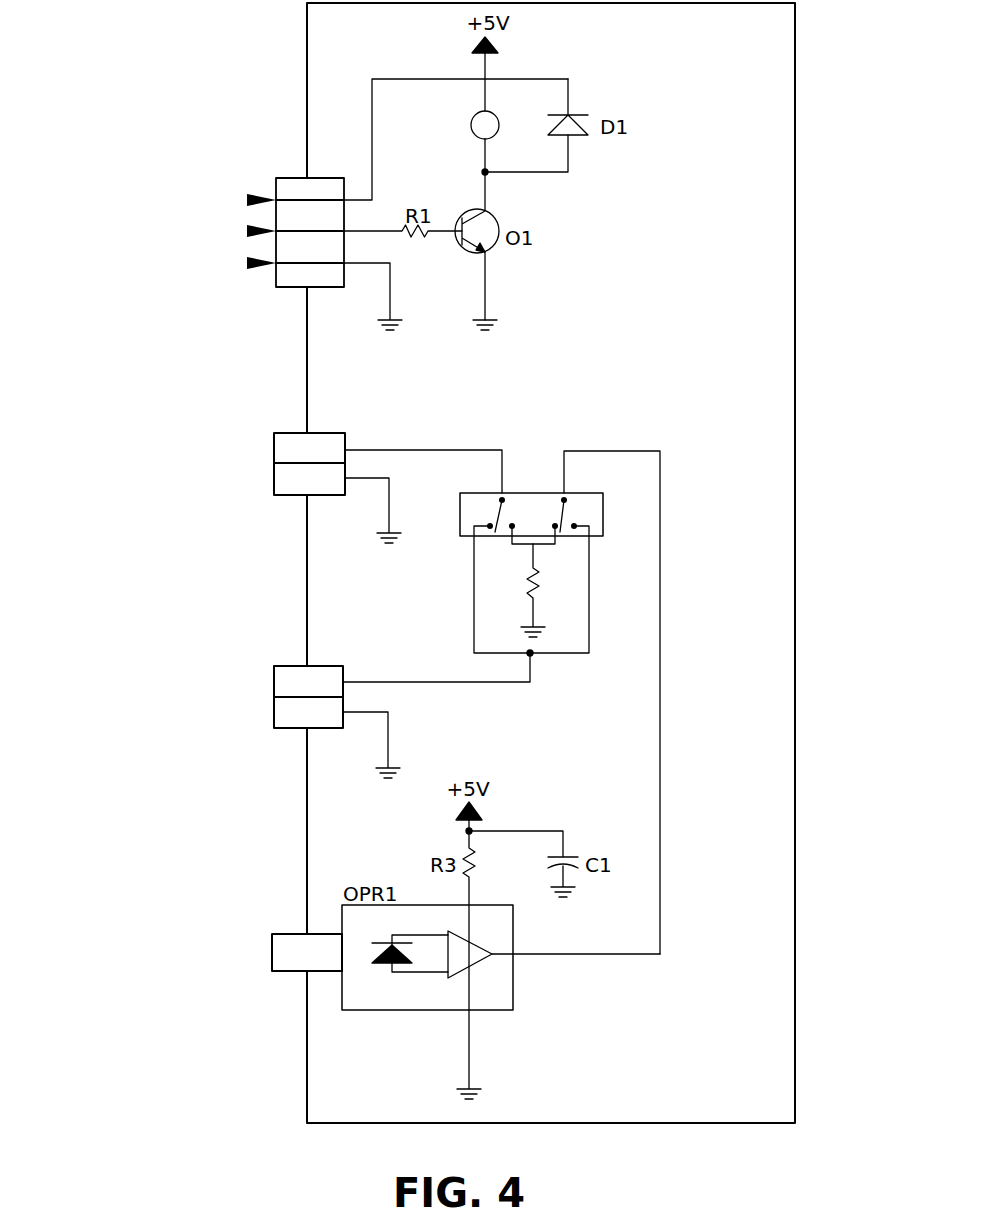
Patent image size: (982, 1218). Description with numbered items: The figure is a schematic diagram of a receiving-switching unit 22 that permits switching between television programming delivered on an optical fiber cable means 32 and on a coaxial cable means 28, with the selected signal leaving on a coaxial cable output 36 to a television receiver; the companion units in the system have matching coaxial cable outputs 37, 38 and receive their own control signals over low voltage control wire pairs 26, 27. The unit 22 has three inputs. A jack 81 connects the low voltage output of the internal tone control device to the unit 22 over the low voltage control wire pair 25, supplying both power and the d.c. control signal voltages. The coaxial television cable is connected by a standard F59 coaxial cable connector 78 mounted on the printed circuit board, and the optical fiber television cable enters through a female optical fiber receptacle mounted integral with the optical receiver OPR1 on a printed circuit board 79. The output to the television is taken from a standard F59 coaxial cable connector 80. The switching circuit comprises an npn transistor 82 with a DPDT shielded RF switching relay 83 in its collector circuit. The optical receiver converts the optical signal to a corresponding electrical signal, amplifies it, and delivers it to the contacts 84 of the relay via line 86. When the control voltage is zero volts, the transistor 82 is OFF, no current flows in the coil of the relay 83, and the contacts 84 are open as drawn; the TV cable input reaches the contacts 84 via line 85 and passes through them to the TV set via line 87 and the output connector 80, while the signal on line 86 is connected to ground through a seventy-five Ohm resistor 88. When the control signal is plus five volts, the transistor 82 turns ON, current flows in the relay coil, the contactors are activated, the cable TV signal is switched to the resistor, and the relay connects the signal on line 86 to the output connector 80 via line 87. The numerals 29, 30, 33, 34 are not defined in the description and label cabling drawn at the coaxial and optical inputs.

The receiving-switching unit 22 is at (795, 395).
The low voltage control wire pair 25 is at (258, 306).
The low voltage control wire pair 26 is at (215, 213).
The low voltage control wire pair 27 is at (215, 213).
The coaxial cable means 28 is at (258, 511).
The cable TV input conductor 29 is at (225, 443).
The cable TV input ground conductor 30 is at (233, 443).
The optical fiber cable means 32 is at (258, 1009).
The optical fibre 33 is at (217, 929).
The optical fibre connector 34 is at (232, 929).
The coaxial cable output 36 is at (280, 763).
The coaxial cable output 37 is at (225, 692).
The coaxial cable output 38 is at (232, 692).
The F59 coaxial cable connector 78 is at (325, 433).
The printed circuit board 79 is at (287, 934).
The coaxial cable connector 80 is at (321, 666).
The jack 81 is at (322, 178).
The npn transistor 82 is at (490, 248).
The DPDT shielded RF switching relay 83 is at (471, 125).
The relay contacts 84 is at (460, 530).
The line 85 is at (413, 451).
The line 86 is at (610, 955).
The line 87 is at (472, 683).
The 75 Ohm resistor 88 is at (540, 583).